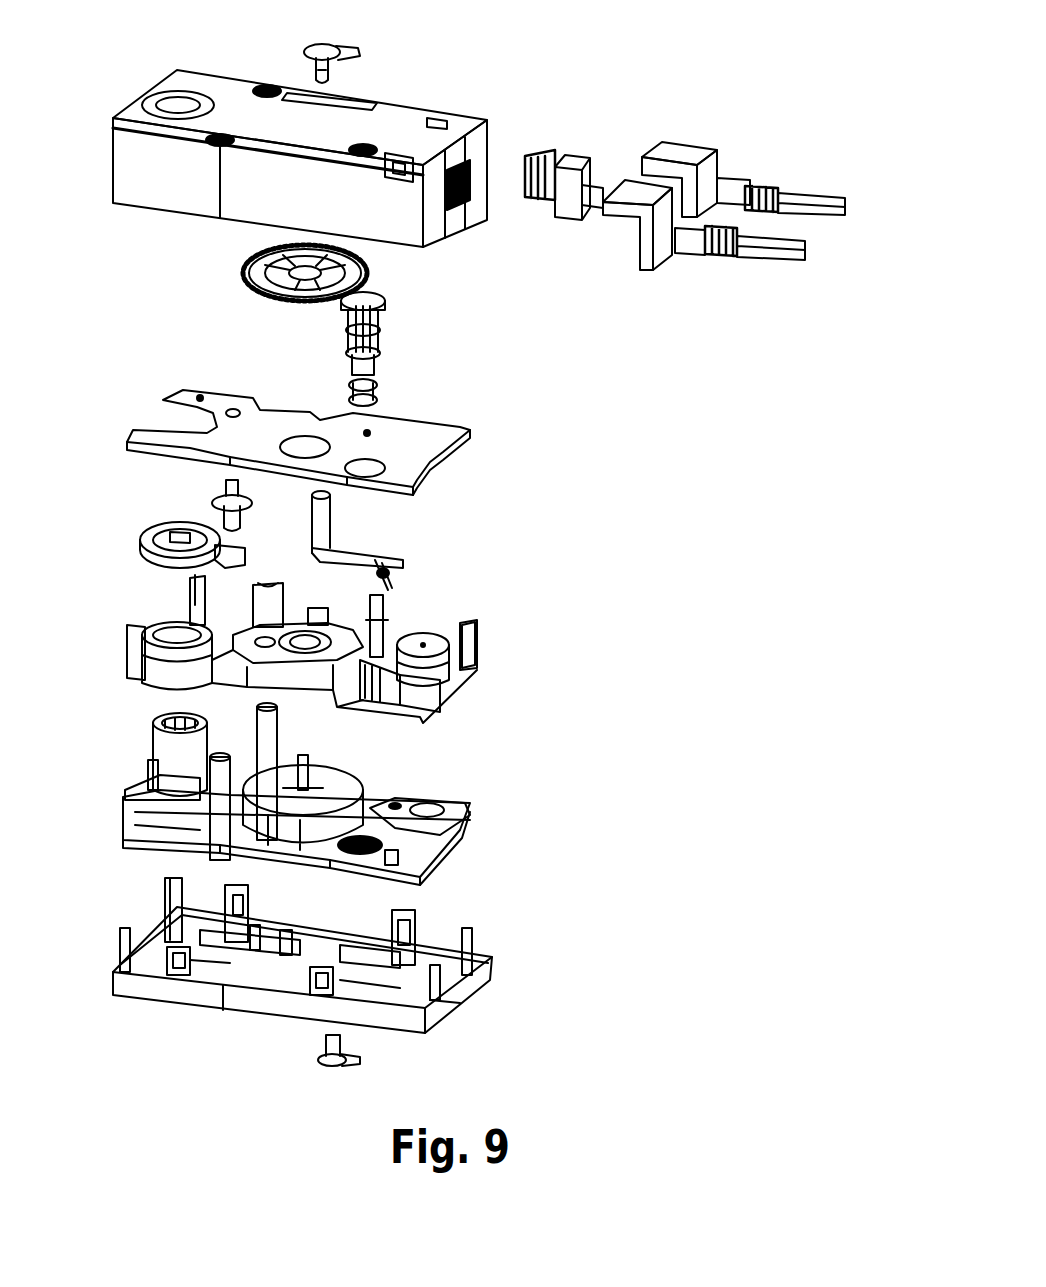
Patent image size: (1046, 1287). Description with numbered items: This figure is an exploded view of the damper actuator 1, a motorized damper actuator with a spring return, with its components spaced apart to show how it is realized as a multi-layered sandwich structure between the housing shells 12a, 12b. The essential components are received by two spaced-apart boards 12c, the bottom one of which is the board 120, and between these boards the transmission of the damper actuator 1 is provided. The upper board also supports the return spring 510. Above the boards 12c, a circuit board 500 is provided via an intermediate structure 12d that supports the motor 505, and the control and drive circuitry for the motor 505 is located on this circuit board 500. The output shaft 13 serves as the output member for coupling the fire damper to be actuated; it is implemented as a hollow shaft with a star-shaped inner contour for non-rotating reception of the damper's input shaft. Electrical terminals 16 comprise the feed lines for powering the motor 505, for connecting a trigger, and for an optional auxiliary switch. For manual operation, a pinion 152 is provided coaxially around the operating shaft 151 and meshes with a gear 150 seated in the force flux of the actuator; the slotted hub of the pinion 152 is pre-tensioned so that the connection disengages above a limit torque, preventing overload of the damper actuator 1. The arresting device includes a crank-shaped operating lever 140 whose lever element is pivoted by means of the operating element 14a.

The damper actuator 1 is at (580, 673).
The housing shell 12a is at (142, 185).
The housing shell 12b is at (158, 985).
The boards 12c is at (448, 857).
The intermediate structure 12d is at (450, 708).
The output shaft 13 is at (172, 747).
The operating element 14a is at (345, 33).
The electrical terminals 16 is at (710, 125).
The board 120 is at (399, 836).
The operating lever 140 is at (347, 535).
The gear 150 is at (380, 265).
The operating shaft 151 is at (383, 377).
The pinion 152 is at (400, 315).
The circuit board 500 is at (400, 453).
The motor 505 is at (500, 675).
The return spring 510 is at (327, 820).